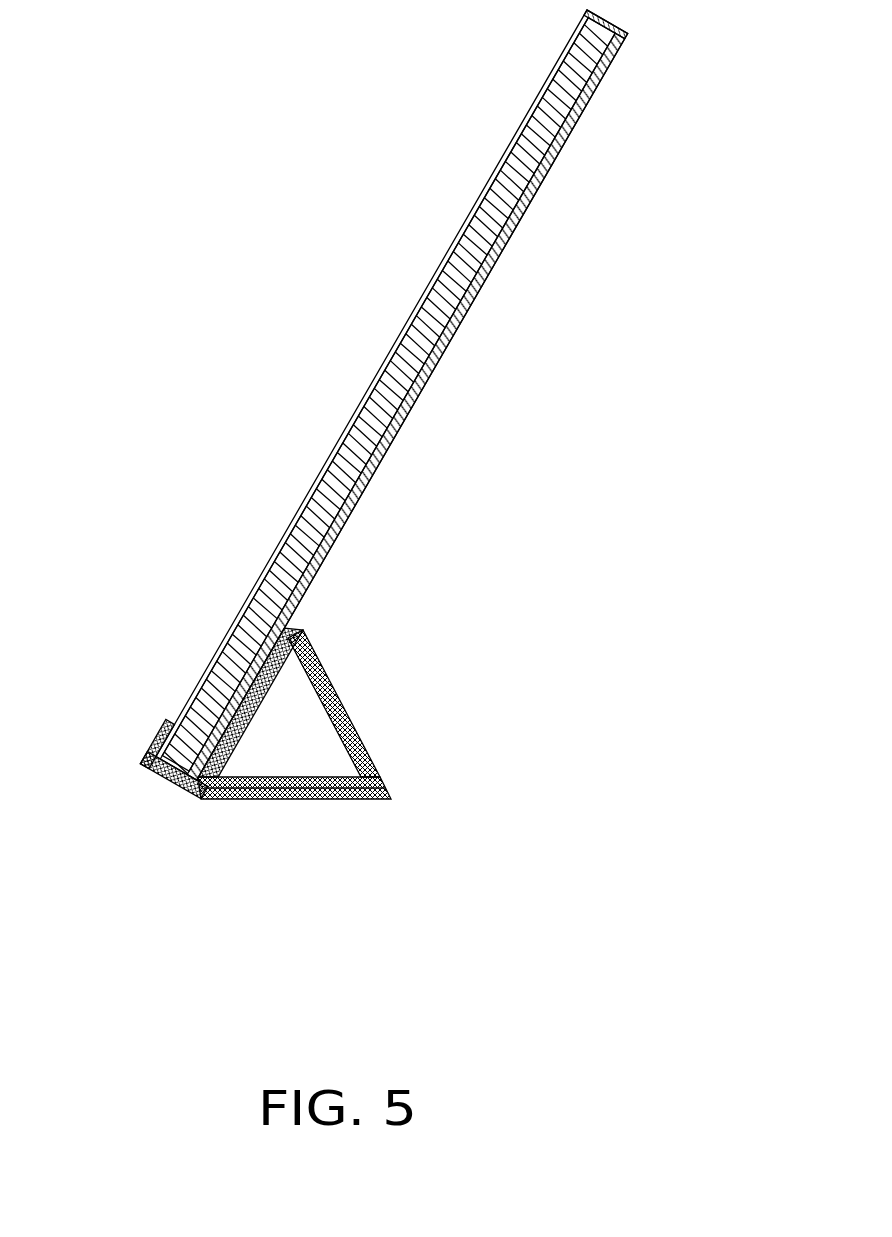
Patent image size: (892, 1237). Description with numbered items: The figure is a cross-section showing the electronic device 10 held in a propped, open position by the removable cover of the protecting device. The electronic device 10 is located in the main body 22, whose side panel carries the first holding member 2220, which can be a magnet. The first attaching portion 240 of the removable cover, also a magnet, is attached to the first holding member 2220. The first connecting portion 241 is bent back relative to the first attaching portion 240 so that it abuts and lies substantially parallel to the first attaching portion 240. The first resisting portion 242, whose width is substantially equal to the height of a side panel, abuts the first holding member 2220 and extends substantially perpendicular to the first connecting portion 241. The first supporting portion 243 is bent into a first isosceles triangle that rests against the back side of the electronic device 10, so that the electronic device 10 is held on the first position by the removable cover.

The electronic device 10 is at (558, 95).
The main body 22 is at (571, 125).
The first attaching portion 240 is at (177, 740).
The first connecting portion 241 is at (157, 733).
The first resisting portion 242 is at (153, 775).
The first supporting portion 243 is at (340, 697).
The first holding member 2220 is at (209, 783).